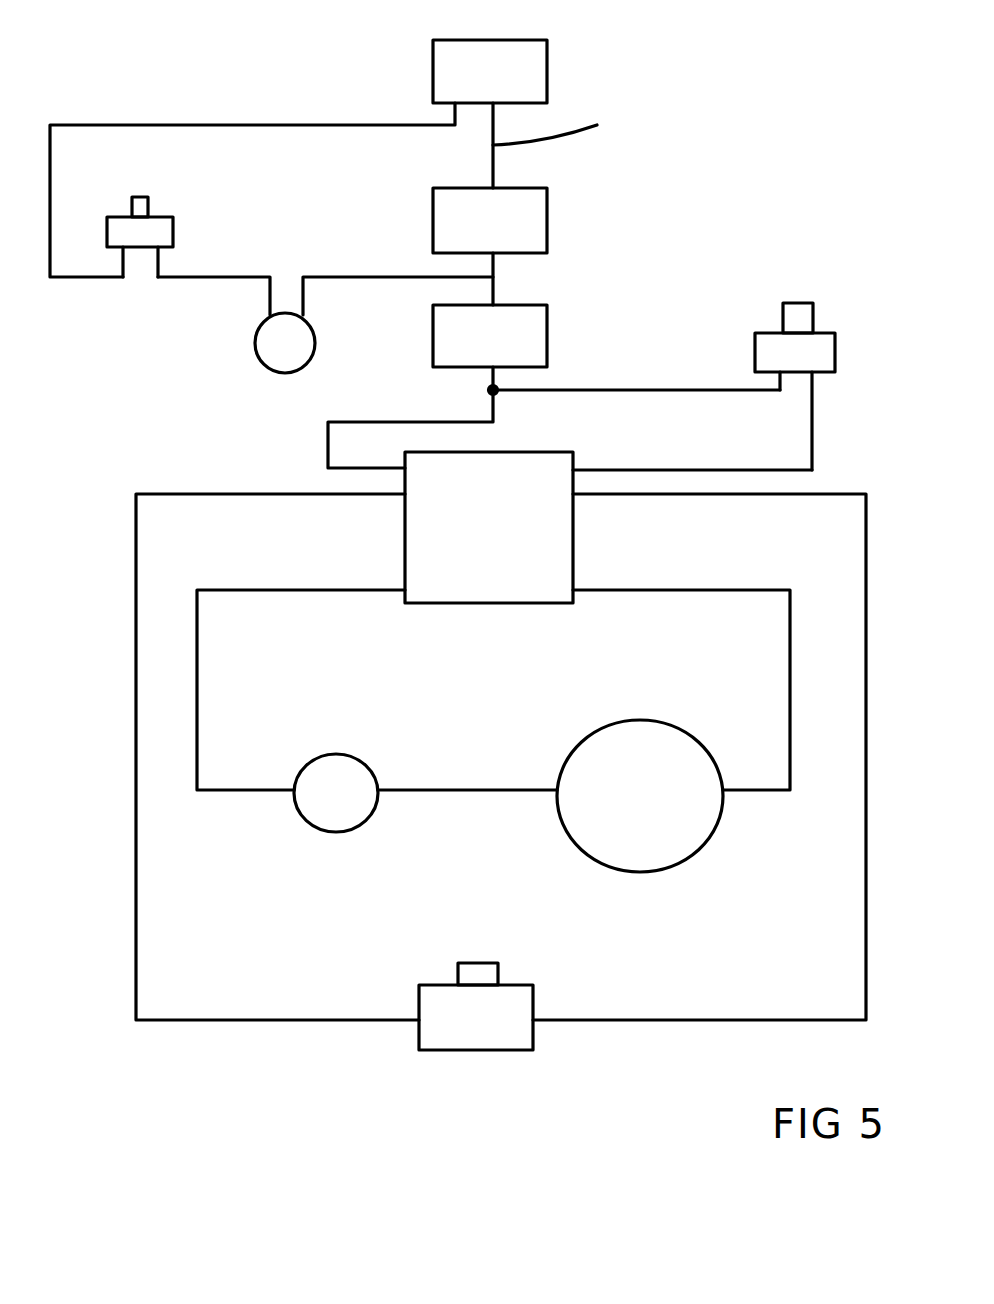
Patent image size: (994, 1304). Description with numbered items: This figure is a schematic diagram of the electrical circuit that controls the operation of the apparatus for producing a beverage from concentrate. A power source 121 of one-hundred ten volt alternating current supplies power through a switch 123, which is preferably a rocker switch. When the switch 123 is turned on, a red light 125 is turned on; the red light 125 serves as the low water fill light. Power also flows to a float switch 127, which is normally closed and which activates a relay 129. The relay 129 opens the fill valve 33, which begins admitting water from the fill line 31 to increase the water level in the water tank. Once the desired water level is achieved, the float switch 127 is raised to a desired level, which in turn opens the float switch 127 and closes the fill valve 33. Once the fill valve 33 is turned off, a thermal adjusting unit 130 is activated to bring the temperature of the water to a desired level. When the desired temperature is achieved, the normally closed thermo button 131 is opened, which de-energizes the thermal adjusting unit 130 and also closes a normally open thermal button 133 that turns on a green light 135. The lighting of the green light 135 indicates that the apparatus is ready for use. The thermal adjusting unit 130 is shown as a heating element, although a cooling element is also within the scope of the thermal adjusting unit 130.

The power source 121 is at (490, 71).
The switch 123 is at (490, 220).
The float switch 127 is at (490, 336).
The relay 129 is at (489, 527).
The red light 125 is at (835, 355).
The green light 135 is at (173, 232).
The thermal button 133 is at (251, 343).
The thermo button 131 is at (336, 793).
The thermal adjusting unit 130 is at (640, 796).
The fill valve 33 is at (476, 1017).
The fill line 31 is at (477, 961).